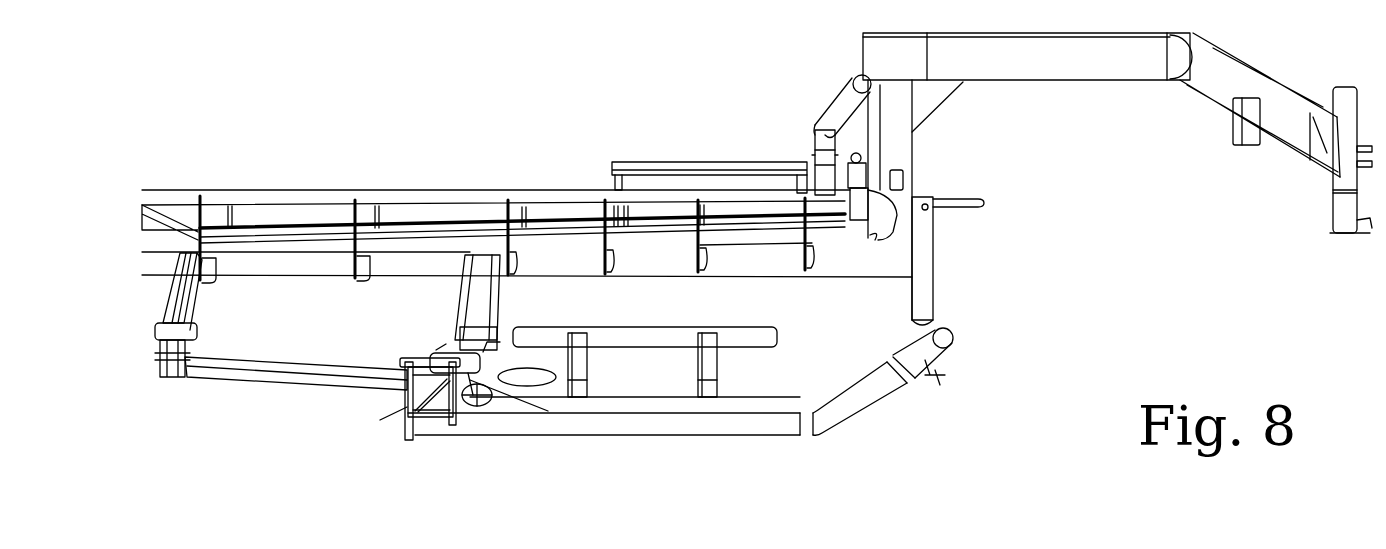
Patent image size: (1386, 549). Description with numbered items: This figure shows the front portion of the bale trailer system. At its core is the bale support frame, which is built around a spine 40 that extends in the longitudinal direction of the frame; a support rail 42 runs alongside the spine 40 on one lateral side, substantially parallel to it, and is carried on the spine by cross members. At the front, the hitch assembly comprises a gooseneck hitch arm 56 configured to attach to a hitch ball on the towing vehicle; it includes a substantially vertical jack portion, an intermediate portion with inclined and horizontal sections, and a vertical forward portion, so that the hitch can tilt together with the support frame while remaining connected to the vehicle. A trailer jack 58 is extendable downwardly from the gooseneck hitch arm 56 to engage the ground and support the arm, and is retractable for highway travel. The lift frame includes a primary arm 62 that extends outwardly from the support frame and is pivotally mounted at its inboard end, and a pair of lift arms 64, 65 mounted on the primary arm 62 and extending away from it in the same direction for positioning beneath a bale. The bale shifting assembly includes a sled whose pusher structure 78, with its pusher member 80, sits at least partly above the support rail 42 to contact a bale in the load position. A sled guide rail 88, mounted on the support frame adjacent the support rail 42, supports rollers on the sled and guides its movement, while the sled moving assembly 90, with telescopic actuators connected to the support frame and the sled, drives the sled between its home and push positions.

The spine 40 is at (278, 260).
The support rail 42 is at (217, 197).
The gooseneck hitch arm 56 is at (1037, 63).
The trailer jack 58 is at (922, 295).
The primary arm 62 is at (427, 387).
The lift arm 64 is at (657, 427).
The lift arm 65 is at (733, 405).
The pusher structure 78 is at (815, 143).
The pusher member 80 is at (837, 102).
The sled guide rail 88 is at (273, 228).
The sled moving assembly 90 is at (750, 238).